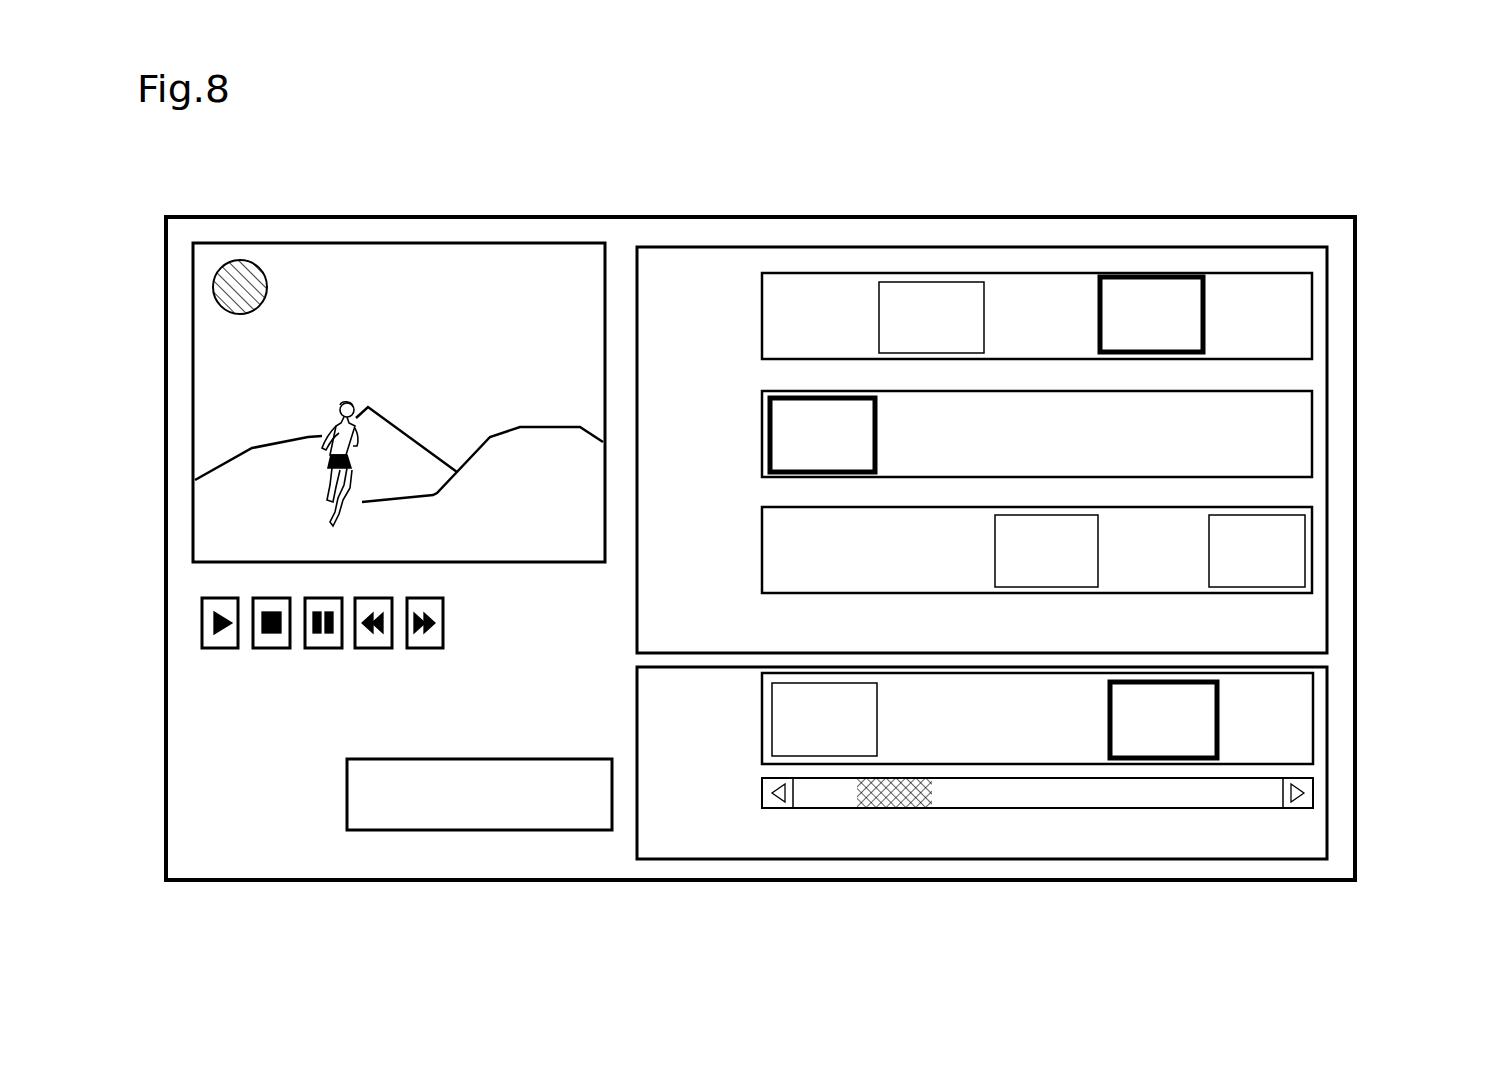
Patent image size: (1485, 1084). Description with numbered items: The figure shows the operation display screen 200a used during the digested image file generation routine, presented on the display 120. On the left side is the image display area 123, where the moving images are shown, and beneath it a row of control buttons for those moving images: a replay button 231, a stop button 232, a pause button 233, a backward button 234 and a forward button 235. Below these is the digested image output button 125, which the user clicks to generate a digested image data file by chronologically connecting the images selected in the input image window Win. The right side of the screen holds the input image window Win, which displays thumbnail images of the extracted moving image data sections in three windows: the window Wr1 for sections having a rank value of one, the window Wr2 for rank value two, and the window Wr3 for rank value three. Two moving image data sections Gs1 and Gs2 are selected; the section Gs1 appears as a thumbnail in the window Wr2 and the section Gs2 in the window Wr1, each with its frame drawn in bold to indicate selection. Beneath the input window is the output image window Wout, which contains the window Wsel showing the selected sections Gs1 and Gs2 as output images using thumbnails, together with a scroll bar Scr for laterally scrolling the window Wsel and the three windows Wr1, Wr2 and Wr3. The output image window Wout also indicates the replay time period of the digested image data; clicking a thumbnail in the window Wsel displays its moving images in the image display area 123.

The operation display screen 200a is at (318, 186).
The display screen 120 is at (453, 217).
The image display area 123 is at (583, 243).
The replay button 231 is at (210, 648).
The stop button 232 is at (270, 648).
The pause button 233 is at (323, 648).
The backward button 234 is at (380, 648).
The forward button 235 is at (430, 648).
The digested image output button 125 is at (428, 830).
The input image window Win is at (1262, 247).
The window for rank value 1 Wr1 is at (1312, 312).
The window for rank value 2 Wr2 is at (1312, 428).
The window for rank value 3 Wr3 is at (1312, 540).
The moving image data section Gs1 is at (787, 398).
The moving image data section Gs2 is at (1180, 277).
The window for selected output images Wsel is at (1313, 720).
The output image window Wout is at (1327, 755).
The scroll bar Scr is at (1313, 793).